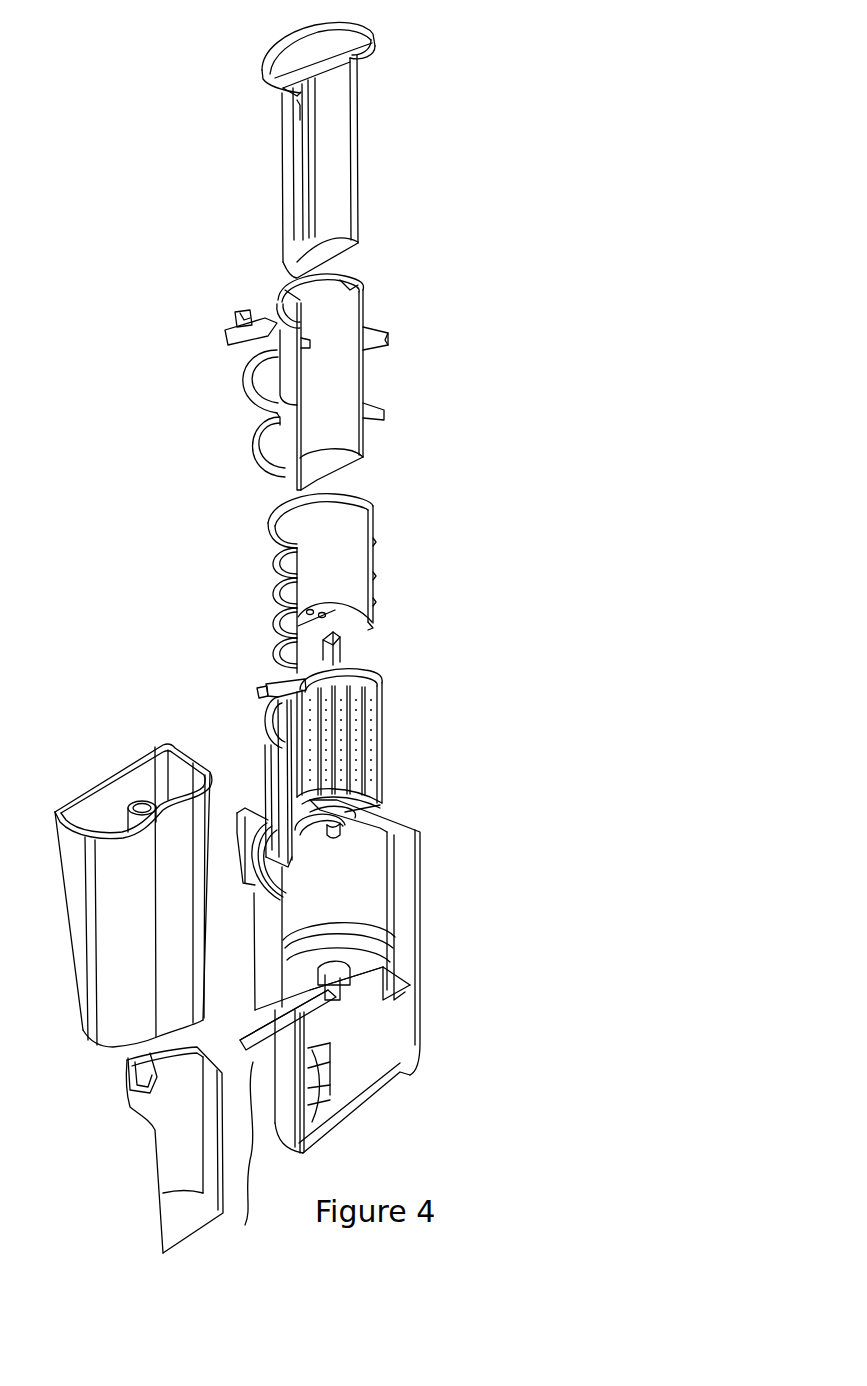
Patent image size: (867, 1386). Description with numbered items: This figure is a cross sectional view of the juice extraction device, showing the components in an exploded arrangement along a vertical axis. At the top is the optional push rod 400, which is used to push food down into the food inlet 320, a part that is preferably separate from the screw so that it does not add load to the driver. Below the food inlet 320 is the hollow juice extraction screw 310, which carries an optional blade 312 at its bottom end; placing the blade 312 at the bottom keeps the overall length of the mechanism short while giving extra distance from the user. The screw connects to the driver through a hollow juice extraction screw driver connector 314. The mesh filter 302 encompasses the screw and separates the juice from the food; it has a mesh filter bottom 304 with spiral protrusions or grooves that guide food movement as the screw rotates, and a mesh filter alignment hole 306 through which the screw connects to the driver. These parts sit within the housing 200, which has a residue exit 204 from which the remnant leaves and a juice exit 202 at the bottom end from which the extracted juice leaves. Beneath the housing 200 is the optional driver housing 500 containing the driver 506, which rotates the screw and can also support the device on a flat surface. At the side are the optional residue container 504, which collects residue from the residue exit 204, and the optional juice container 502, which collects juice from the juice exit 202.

The push rod 400 is at (362, 130).
The food inlet 320 is at (368, 380).
The hollow juice extraction screw 310 is at (382, 540).
The blade 312 is at (300, 616).
The hollow juice extraction screw driver connector 314 is at (340, 657).
The mesh filter 302 is at (348, 732).
The mesh filter bottom 304 is at (330, 813).
The mesh filter alignment hole 306 is at (340, 833).
The housing 200 is at (377, 928).
The driver housing 500 is at (420, 968).
The driver 506 is at (380, 1060).
The residue container 504 is at (125, 880).
The juice container 502 is at (143, 1167).
The residue exit 204 is at (258, 813).
The juice exit 202 is at (265, 1128).